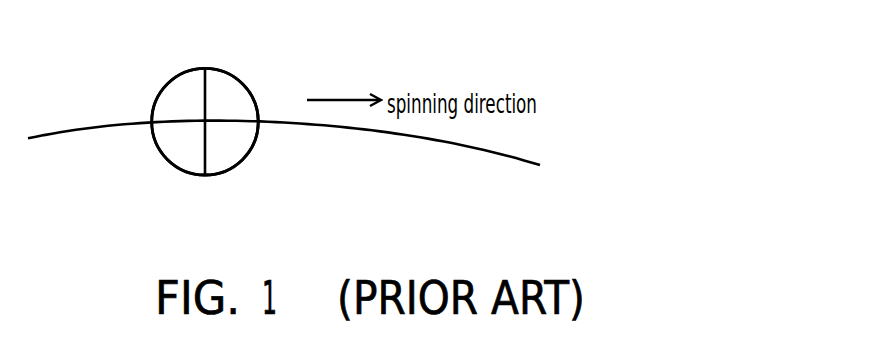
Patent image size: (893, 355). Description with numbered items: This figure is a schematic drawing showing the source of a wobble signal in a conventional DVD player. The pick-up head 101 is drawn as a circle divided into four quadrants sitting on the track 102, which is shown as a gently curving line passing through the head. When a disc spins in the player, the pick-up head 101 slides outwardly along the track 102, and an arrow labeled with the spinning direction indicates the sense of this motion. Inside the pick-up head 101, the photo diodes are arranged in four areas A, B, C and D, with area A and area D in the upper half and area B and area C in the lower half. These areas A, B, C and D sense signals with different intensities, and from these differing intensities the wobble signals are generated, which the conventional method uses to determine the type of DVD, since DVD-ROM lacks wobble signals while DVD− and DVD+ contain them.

The pick-up head 101 is at (205, 90).
The track 102 is at (305, 153).
The photo diode area A is at (178, 94).
The photo diode area B is at (178, 148).
The photo diode area C is at (231, 148).
The photo diode area D is at (231, 94).